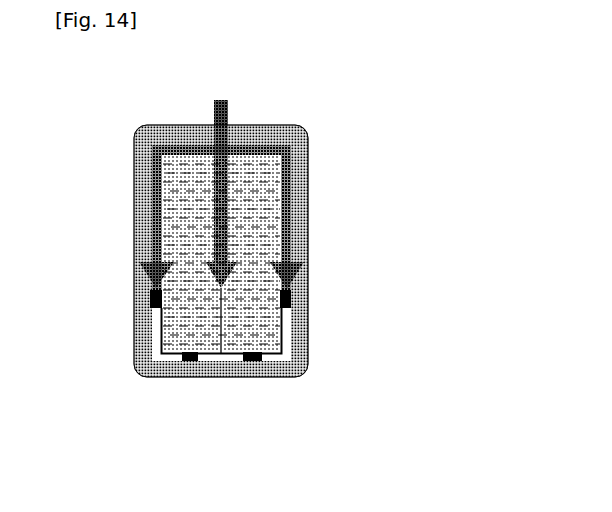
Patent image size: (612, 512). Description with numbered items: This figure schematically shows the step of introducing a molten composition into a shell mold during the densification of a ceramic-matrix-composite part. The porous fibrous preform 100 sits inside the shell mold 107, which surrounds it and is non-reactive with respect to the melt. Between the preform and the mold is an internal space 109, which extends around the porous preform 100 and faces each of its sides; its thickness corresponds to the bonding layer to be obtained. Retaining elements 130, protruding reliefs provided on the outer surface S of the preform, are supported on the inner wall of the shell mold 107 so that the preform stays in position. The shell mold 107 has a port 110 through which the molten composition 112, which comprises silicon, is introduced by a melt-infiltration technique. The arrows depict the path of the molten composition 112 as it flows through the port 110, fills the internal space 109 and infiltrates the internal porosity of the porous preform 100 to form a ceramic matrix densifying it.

The porous fibrous preform 100 is at (292, 358).
The shell mold 107 is at (304, 168).
The internal space 109 is at (292, 230).
The port 110 is at (212, 118).
The molten composition 112 is at (229, 103).
The retaining elements 130 is at (150, 298).
The outer surface S is at (263, 336).